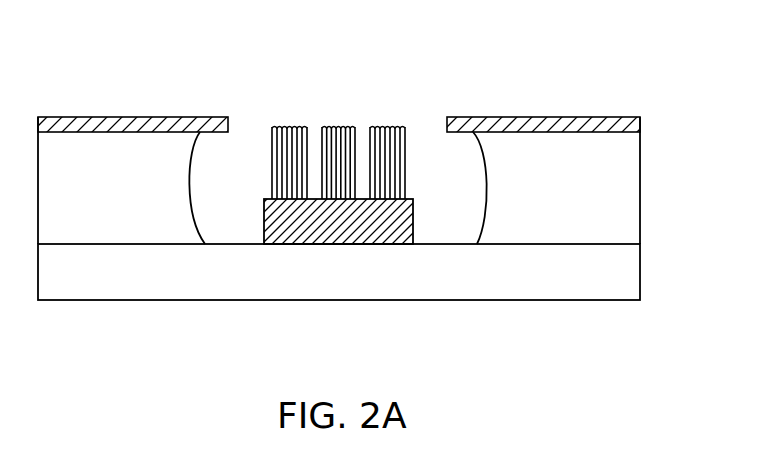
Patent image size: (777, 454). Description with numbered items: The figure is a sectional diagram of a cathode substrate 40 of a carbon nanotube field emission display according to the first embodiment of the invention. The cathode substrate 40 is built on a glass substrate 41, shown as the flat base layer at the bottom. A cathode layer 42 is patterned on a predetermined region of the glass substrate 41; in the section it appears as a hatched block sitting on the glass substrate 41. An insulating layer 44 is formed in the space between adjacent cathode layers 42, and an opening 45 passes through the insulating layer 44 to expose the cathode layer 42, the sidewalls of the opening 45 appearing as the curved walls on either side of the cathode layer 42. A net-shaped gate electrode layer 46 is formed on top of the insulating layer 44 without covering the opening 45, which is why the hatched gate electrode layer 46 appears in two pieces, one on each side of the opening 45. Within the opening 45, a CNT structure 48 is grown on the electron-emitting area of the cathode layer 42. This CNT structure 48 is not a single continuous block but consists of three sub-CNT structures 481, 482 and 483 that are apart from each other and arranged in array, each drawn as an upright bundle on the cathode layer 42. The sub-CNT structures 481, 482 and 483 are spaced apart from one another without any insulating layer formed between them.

The cathode substrate 40 is at (640, 308).
The glass substrate 41 is at (627, 268).
The cathode layer 42 is at (347, 228).
The insulating layer 44 is at (628, 184).
The opening 45 is at (458, 162).
The net-shaped gate electrode layer 46 is at (127, 125).
The CNT structure 48 is at (412, 56).
The sub-CNT structure 481 is at (287, 123).
The sub-CNT structure 482 is at (337, 123).
The sub-CNT structure 483 is at (385, 123).